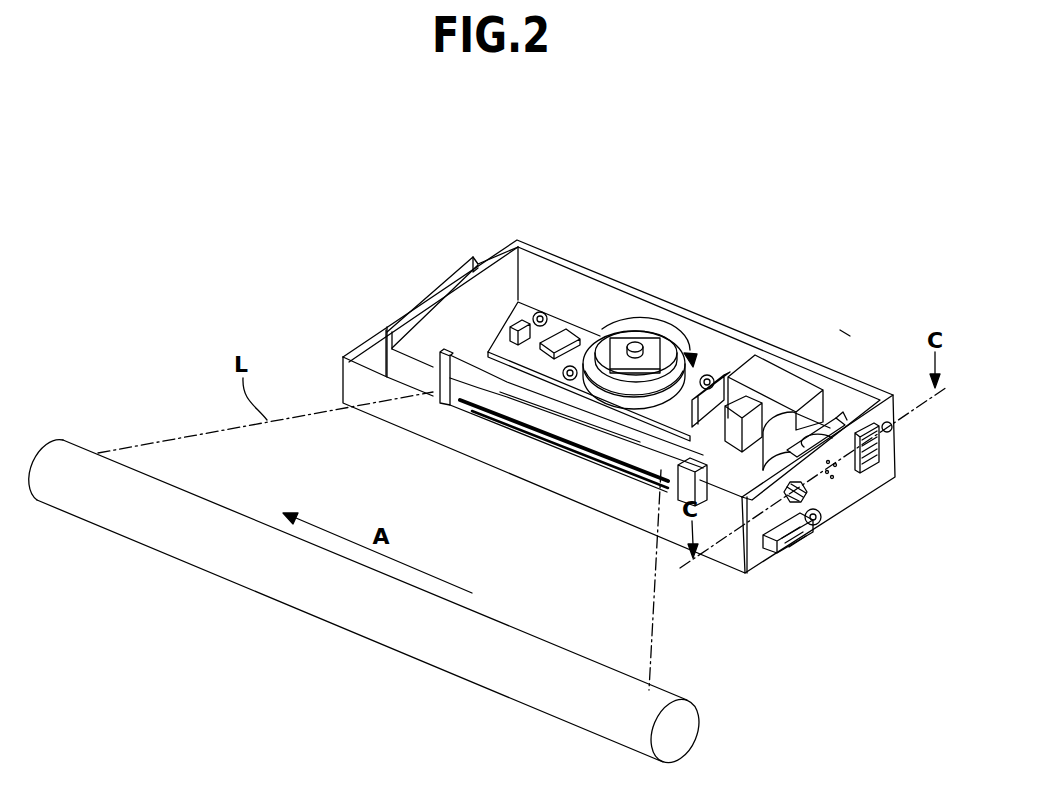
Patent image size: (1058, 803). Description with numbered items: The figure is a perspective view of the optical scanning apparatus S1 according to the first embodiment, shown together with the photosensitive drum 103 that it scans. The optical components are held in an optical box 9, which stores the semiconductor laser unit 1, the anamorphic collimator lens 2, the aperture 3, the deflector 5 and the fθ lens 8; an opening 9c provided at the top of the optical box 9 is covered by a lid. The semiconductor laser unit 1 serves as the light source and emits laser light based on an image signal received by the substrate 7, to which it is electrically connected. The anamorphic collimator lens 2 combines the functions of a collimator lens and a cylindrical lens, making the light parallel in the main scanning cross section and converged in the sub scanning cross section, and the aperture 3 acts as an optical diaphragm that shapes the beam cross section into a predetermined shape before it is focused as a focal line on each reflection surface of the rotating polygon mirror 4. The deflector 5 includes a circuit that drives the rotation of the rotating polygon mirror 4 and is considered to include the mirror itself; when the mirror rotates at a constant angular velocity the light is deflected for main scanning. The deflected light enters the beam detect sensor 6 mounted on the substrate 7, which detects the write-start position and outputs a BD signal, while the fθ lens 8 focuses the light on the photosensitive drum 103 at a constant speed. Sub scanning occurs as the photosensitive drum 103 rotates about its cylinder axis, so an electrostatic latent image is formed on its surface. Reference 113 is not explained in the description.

The semiconductor laser unit 1 is at (862, 387).
The anamorphic collimator lens 2 is at (752, 405).
The aperture 3 is at (708, 377).
The rotating polygon mirror 4 is at (652, 347).
The deflector 5 is at (563, 337).
The beam detect (BD) sensor 6 is at (800, 495).
The substrate 7 is at (873, 473).
The fθ lens 8 is at (475, 373).
The optical box 9 is at (610, 300).
The opening 9c is at (390, 337).
The photosensitive drum 103 is at (298, 588).
The terminal 113 is at (847, 333).
The optical scanning apparatus S1 is at (822, 202).